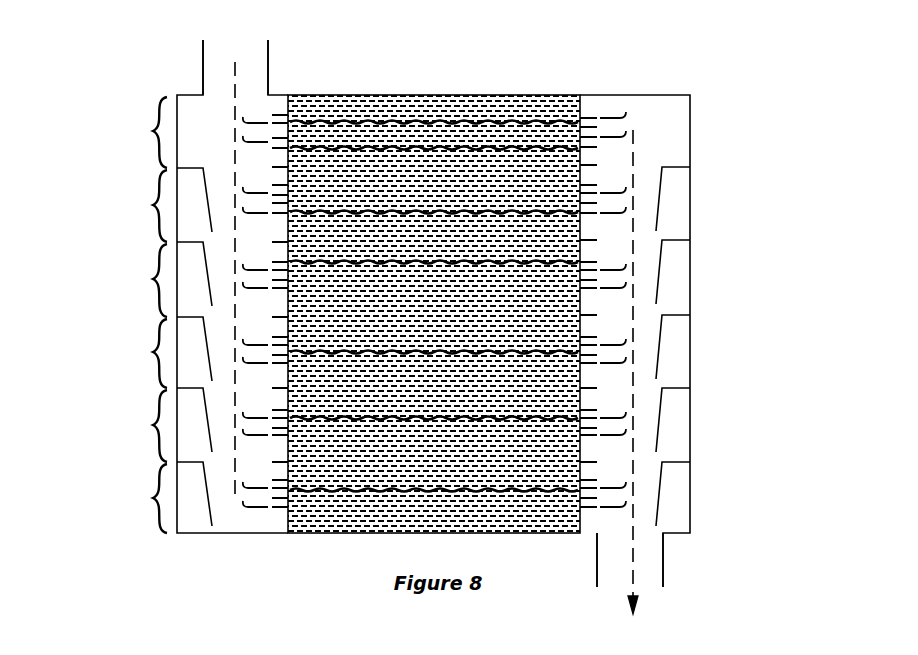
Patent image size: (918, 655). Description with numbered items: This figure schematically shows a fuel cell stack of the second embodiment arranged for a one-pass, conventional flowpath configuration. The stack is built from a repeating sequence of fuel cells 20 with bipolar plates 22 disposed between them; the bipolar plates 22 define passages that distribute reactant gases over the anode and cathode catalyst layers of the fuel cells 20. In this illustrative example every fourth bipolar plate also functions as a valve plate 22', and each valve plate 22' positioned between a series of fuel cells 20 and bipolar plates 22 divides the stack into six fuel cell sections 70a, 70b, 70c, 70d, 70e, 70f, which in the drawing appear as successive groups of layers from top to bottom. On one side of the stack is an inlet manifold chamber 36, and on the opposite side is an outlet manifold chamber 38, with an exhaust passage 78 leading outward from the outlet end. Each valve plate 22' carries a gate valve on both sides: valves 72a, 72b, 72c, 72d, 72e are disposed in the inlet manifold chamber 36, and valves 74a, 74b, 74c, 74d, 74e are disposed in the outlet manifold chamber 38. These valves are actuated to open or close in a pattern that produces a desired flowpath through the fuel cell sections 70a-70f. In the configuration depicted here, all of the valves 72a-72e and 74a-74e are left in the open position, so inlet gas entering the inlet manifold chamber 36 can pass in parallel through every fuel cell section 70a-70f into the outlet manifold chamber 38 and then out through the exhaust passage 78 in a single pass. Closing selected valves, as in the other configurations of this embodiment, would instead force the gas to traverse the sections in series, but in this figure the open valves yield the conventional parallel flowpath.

The fuel cell 20 is at (425, 120).
The bipolar plate 22 is at (663, 89).
The valve plate 22' is at (681, 289).
The inlet manifold chamber 36 is at (222, 117).
The outlet manifold chamber 38 is at (622, 483).
The fuel cell section 70a is at (137, 132).
The fuel cell section 70b is at (137, 206).
The fuel cell section 70c is at (138, 280).
The fuel cell section 70d is at (137, 353).
The fuel cell section 70e is at (137, 426).
The fuel cell section 70f is at (139, 498).
The valve 72a is at (210, 193).
The valve 72b is at (210, 270).
The valve 72c is at (210, 345).
The valve 72d is at (210, 415).
The valve 72e is at (210, 490).
The valve 74a is at (663, 190).
The valve 74b is at (663, 262).
The valve 74c is at (663, 336).
The valve 74d is at (663, 410).
The valve 74e is at (663, 482).
The exhaust passage 78 is at (668, 580).